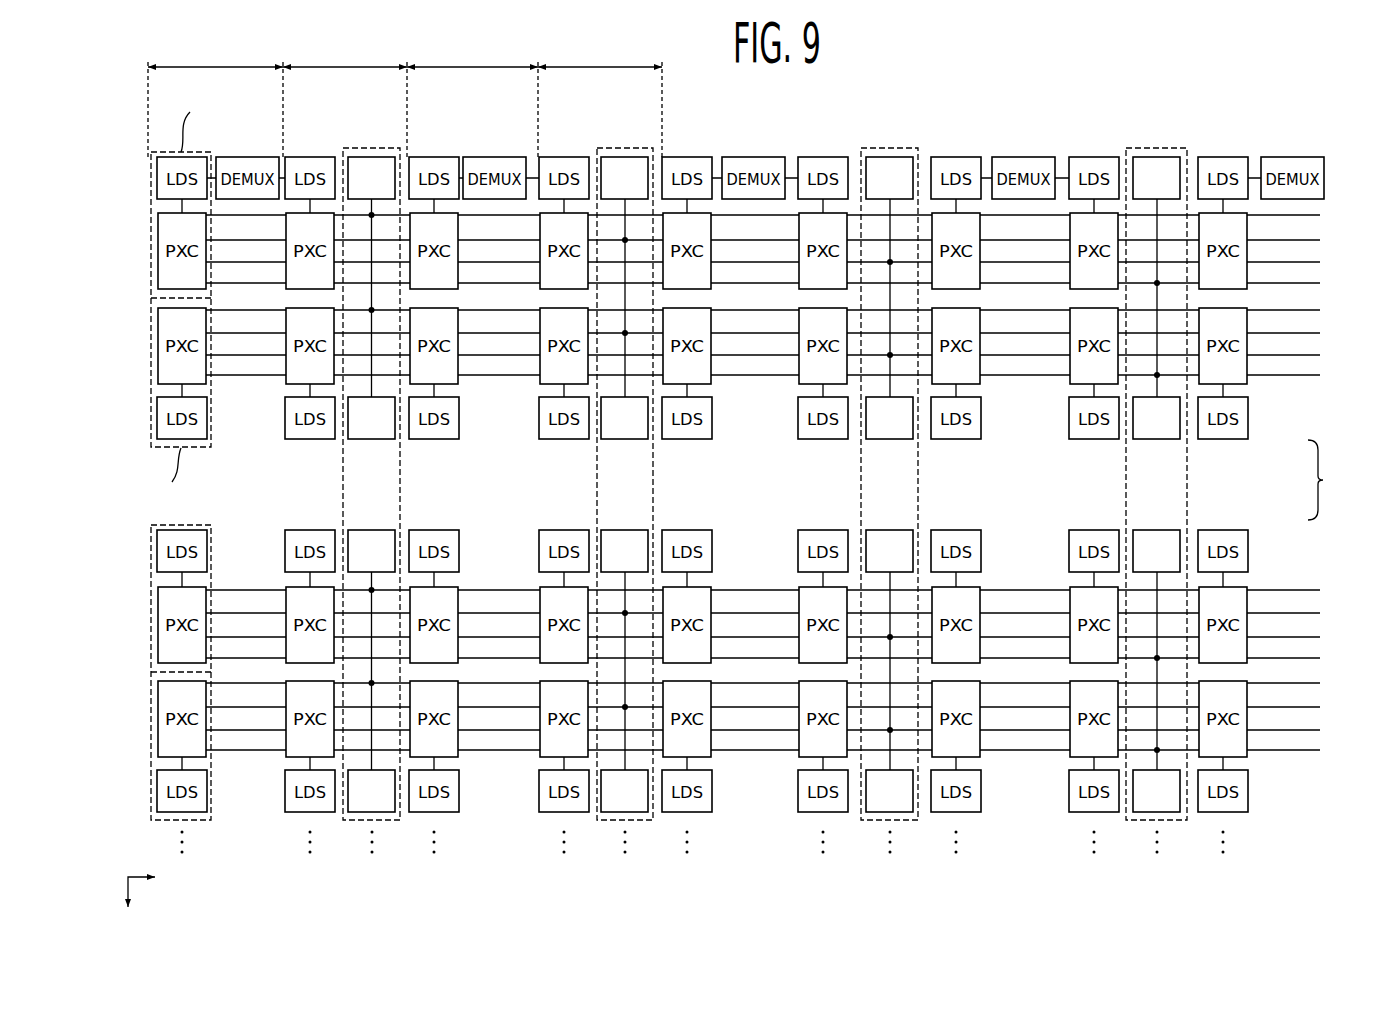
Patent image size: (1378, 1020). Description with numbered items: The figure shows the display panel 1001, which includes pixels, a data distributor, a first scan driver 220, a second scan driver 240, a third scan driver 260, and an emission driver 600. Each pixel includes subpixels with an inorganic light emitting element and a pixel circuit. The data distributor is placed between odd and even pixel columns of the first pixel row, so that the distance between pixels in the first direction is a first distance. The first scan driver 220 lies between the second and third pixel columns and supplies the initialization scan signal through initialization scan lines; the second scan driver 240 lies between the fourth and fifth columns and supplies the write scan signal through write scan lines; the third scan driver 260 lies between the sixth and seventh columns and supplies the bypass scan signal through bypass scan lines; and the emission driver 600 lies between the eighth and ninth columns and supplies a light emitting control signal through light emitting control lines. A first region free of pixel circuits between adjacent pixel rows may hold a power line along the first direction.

The display panel 1001 is at (968, 82).
The first scan driver 220 is at (372, 148).
The second scan driver 240 is at (625, 148).
The third scan driver 260 is at (890, 148).
The emission driver 600 is at (1157, 148).